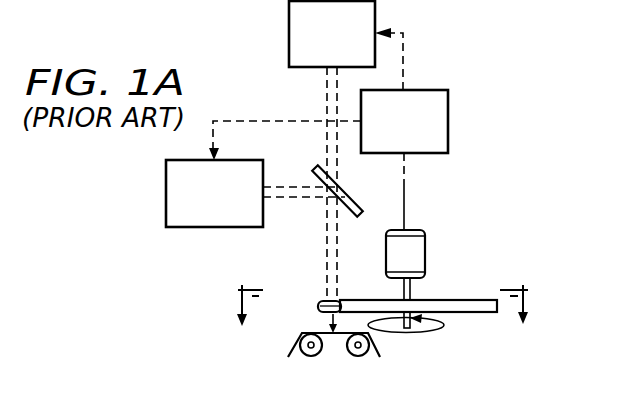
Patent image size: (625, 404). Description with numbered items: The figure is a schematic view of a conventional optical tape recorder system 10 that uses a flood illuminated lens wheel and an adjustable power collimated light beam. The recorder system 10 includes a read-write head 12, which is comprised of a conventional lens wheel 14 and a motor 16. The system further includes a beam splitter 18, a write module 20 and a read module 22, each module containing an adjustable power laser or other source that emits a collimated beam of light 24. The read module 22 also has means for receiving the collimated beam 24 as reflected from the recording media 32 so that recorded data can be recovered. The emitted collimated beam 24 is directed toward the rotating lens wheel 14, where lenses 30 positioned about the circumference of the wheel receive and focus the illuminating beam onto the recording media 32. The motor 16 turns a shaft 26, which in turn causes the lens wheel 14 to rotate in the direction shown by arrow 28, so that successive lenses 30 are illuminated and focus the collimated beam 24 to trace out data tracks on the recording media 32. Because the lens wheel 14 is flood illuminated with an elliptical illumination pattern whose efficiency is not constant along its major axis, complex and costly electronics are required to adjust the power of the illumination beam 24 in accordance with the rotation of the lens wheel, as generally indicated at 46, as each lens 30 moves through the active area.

The optical tape recorder system 10 is at (478, 71).
The read-write head 12 is at (460, 222).
The lens wheel 14 is at (456, 312).
The motor 16 is at (425, 250).
The beam splitter 18 is at (347, 200).
The write module 20 is at (289, 30).
The read module 22 is at (166, 190).
The collimated beam of light 24 is at (327, 252).
The shaft 26 is at (410, 290).
The arrow 28 is at (396, 333).
The lenses 30 is at (318, 308).
The recording media 32 is at (336, 335).
The power adjustment 46 is at (405, 202).